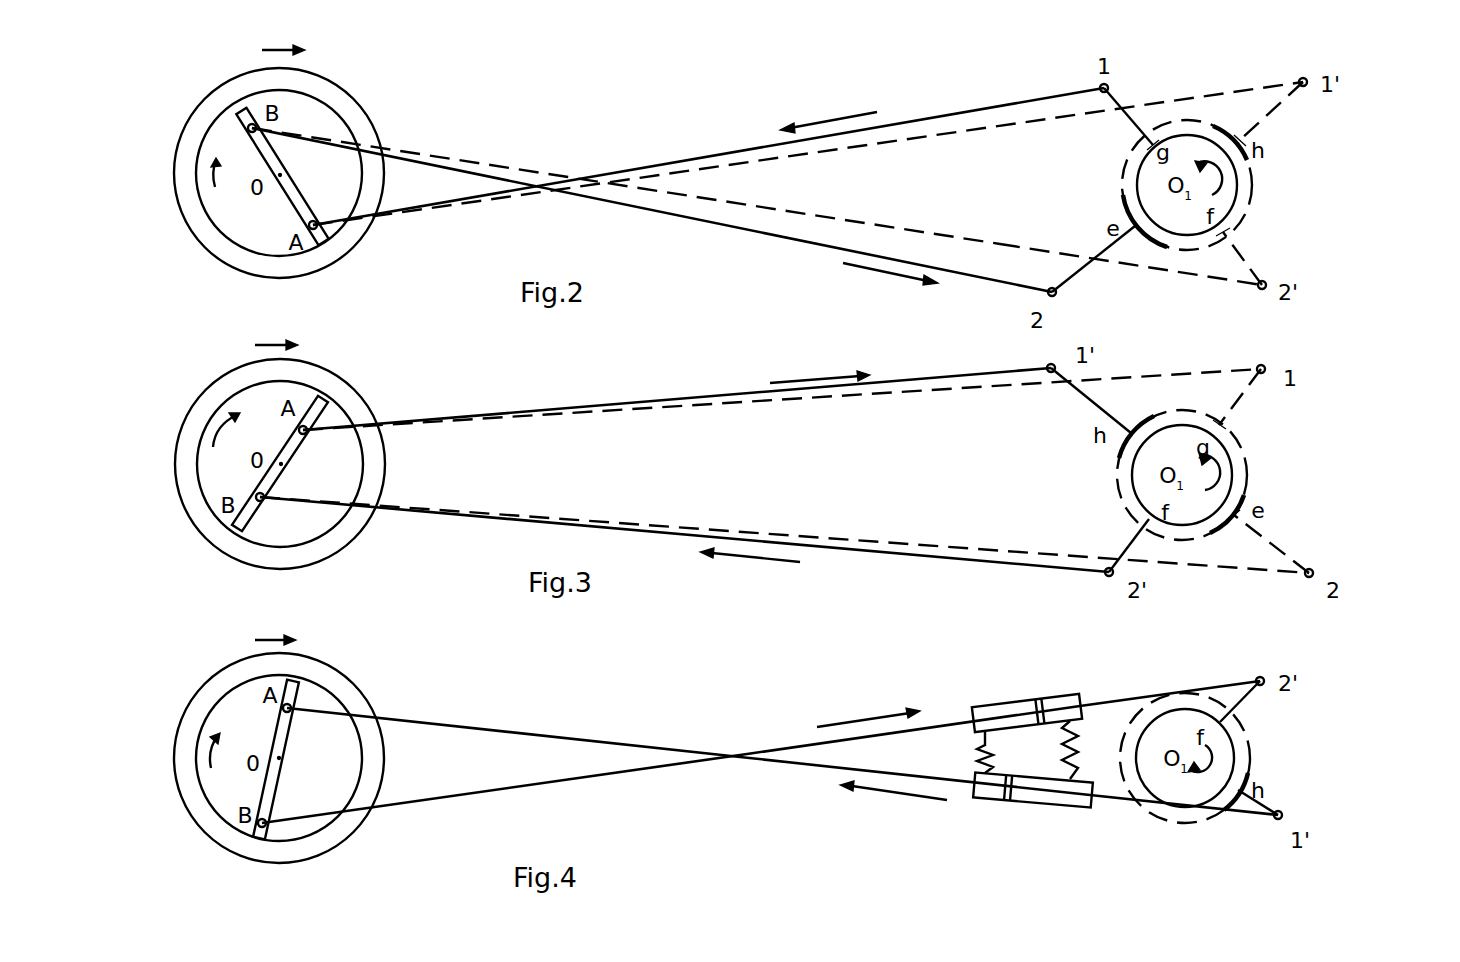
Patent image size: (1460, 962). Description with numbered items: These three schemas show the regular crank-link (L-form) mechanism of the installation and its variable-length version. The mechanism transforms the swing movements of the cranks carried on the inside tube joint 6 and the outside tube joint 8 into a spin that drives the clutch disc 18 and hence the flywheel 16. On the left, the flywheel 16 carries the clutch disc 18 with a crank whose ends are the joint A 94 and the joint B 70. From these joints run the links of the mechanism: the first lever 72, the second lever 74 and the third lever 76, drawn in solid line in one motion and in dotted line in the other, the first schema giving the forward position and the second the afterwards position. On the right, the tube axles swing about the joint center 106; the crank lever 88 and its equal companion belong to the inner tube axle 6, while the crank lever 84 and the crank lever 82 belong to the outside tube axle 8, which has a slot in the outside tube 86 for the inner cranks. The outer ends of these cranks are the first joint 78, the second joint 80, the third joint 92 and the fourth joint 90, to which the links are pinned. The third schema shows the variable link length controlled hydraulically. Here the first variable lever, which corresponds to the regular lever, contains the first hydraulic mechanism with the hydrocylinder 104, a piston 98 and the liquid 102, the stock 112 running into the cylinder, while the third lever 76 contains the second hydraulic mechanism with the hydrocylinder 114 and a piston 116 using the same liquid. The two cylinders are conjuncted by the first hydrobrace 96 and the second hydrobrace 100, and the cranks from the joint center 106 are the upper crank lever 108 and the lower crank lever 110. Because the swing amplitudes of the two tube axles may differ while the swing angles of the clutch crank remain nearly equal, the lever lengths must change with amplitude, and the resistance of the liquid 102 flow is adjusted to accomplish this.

In FIG. 3, the inside tube joint 6 is at (1222, 458).
In FIG. 3, the outside tube joint 8 is at (1248, 465).
In FIG. 2, the flywheel 16 is at (208, 235).
In FIG. 3, the flywheel 16 is at (195, 512).
In FIG. 4, the flywheel 16 is at (198, 815).
In FIG. 2, the clutch disc of flywheel inclusion and link mechanism 18 is at (218, 210).
In FIG. 3, the clutch disc of flywheel inclusion and link mechanism 18 is at (213, 472).
In FIG. 4, the clutch disc of flywheel inclusion and link mechanism 18 is at (215, 778).
In FIG. 2, the joint B 70 is at (252, 128).
In FIG. 2, the lever A-1' 72 is at (923, 135).
In FIG. 3, the lever A-1' 72 is at (895, 382).
In FIG. 4, the lever A-1' 72 is at (436, 722).
In FIG. 2, the lever B-2 74 is at (943, 233).
In FIG. 3, the lever B-2 74 is at (885, 542).
In FIG. 2, the lever A-2' 76 is at (1033, 97).
In FIG. 3, the lever A-2' 76 is at (987, 390).
In FIG. 2, the joint 1 78 is at (1098, 85).
In FIG. 2, the joint 1' 80 is at (1297, 80).
In FIG. 2, the lever 1'-h 82 is at (1287, 95).
In FIG. 2, the lever e-2 84 is at (1222, 279).
In FIG. 3, the lever e-2 84 is at (1027, 567).
In FIG. 4, the lever e-2 84 is at (538, 790).
In FIG. 2, the slot in outside tube 86 is at (1253, 194).
In FIG. 2, the lever f-2' 88 is at (1243, 252).
In FIG. 2, the joint 2' 90 is at (1267, 283).
In FIG. 2, the joint 2 92 is at (1062, 297).
In FIG. 2, the joint A 94 is at (305, 224).
In FIG. 4, the first hydrobrace 96 is at (980, 746).
In FIG. 4, the piston 98 is at (1003, 800).
In FIG. 4, the second hydrobrace 100 is at (1055, 750).
In FIG. 4, the liquid 102 is at (1057, 807).
In FIG. 4, the hydrocylinder of B-1' lever 104 is at (1093, 813).
In FIG. 4, the joint center O1 106 is at (1210, 754).
In FIG. 4, the lever O1-1 108 is at (1242, 795).
In FIG. 4, the lever O1-2' 110 is at (1233, 717).
In FIG. 4, the stock 112 is at (808, 745).
In FIG. 4, the hydrocylinder of A-2' lever 114 is at (997, 705).
In FIG. 4, the piston 116 is at (1037, 700).